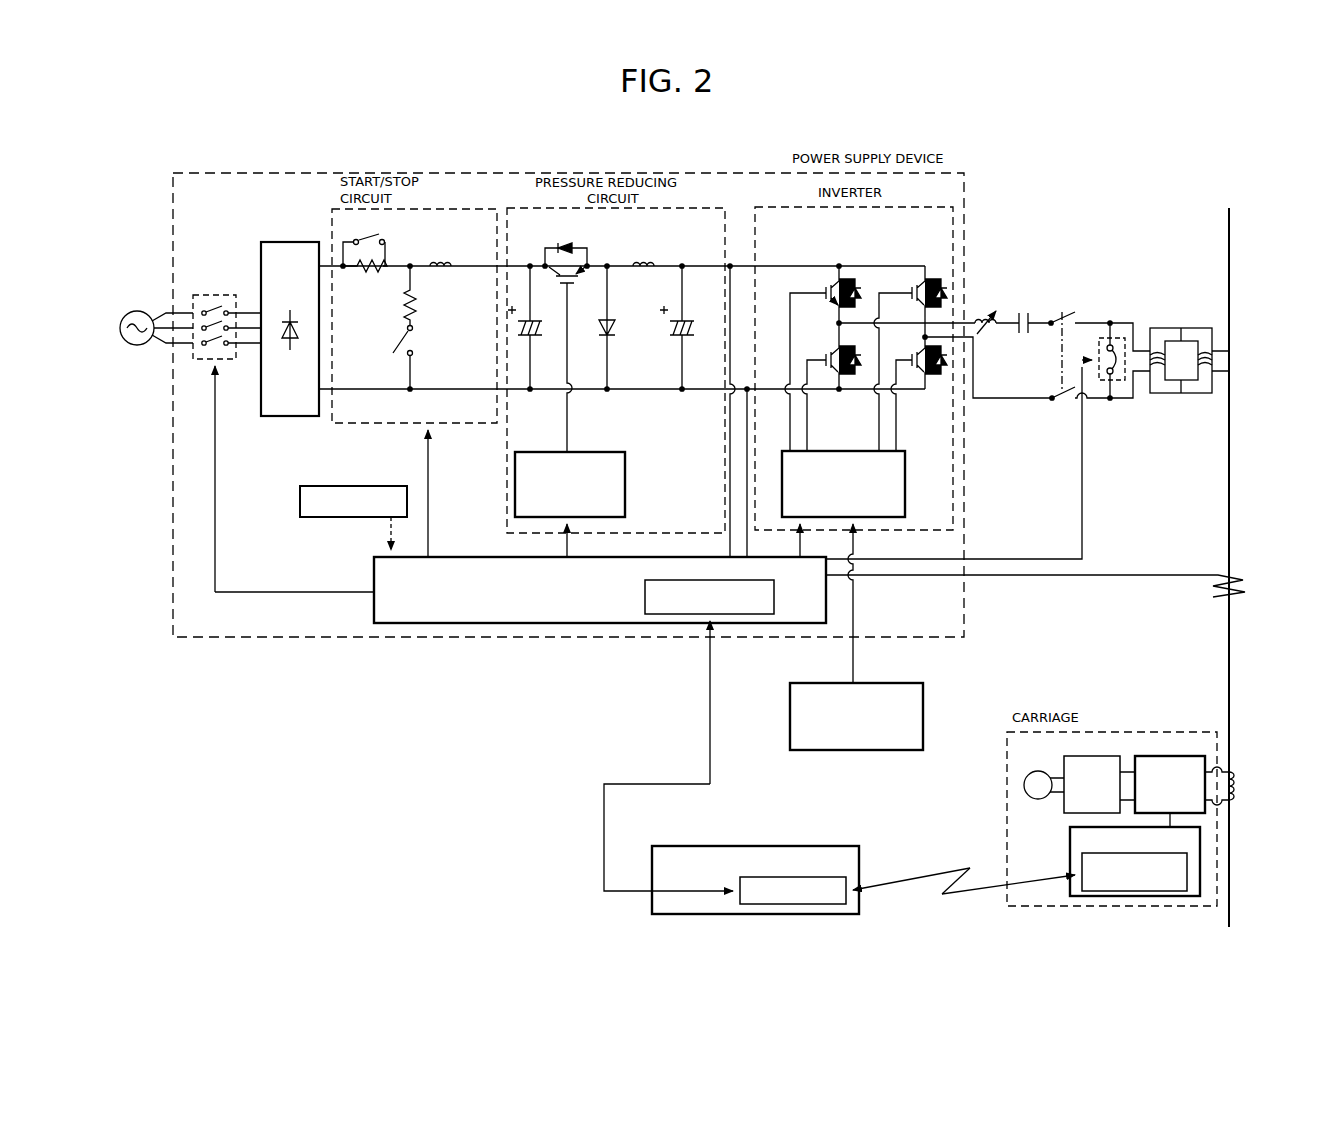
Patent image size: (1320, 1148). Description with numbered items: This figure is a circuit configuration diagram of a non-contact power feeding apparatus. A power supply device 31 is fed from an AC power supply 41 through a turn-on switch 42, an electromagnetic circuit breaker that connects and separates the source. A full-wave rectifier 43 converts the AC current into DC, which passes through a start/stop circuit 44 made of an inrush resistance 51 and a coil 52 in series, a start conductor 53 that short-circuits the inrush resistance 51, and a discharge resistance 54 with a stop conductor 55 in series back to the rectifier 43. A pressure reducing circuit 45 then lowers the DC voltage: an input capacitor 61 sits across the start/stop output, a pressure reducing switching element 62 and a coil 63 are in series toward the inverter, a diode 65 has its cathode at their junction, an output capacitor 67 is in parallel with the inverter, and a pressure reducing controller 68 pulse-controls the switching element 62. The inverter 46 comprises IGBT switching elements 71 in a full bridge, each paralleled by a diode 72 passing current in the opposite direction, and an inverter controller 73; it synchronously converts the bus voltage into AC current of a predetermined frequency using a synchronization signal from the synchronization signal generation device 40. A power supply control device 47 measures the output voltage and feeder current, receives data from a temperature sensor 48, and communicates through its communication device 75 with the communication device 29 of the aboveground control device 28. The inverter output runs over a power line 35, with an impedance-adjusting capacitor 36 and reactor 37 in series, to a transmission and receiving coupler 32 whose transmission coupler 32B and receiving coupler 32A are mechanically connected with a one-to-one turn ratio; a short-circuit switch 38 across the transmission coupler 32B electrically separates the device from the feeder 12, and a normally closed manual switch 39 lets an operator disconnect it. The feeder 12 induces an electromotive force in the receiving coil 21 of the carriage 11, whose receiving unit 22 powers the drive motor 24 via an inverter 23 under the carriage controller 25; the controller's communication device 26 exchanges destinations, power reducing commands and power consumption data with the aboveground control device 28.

The carriage 11 is at (1185, 730).
The feeder 12 is at (1230, 222).
The receiving coil 21 is at (1232, 770).
The receiving unit 22 is at (1165, 755).
The inverter 23 is at (1098, 755).
The drive motor 24 is at (1037, 772).
The carriage controller 25 is at (1068, 848).
The communication device 26 is at (1172, 893).
The aboveground control device 28 is at (847, 845).
The communication device 29 is at (808, 904).
The power supply device 31 is at (964, 210).
The transmission and receiving coupler 32 is at (1179, 358).
The receiving coupler 32A is at (1202, 393).
The transmission coupler 32B is at (1167, 393).
The power line 35 is at (1034, 341).
The capacitor 36 is at (1022, 317).
The reactor 37 is at (985, 317).
The short-circuit switch 38 is at (1115, 320).
The manual switch 39 is at (1062, 317).
The synchronization signal generation device 40 is at (923, 700).
The AC power supply 41 is at (133, 312).
The turn-on switch 42 is at (218, 295).
The rectifier 43 is at (283, 242).
The start/stop circuit 44 is at (471, 207).
The pressure reducing circuit 45 is at (706, 207).
The inverter 46 is at (921, 207).
The power supply control device 47 is at (372, 575).
The temperature sensor 48 is at (317, 485).
The inrush resistance 51 is at (365, 280).
The coil 52 is at (445, 257).
The start conductor 53 is at (378, 228).
The discharge resistance 54 is at (425, 293).
The stop conductor 55 is at (422, 335).
The input capacitor 61 is at (533, 337).
The pressure reducing switching element 62 is at (577, 282).
The coil 63 is at (642, 262).
The diode 65 is at (612, 337).
The output capacitor 67 is at (693, 317).
The pressure reducing controller 68 is at (625, 478).
The switching element 71 is at (822, 292).
The diode 72 is at (862, 292).
The inverter controller 73 is at (905, 478).
The communication device 75 is at (643, 608).